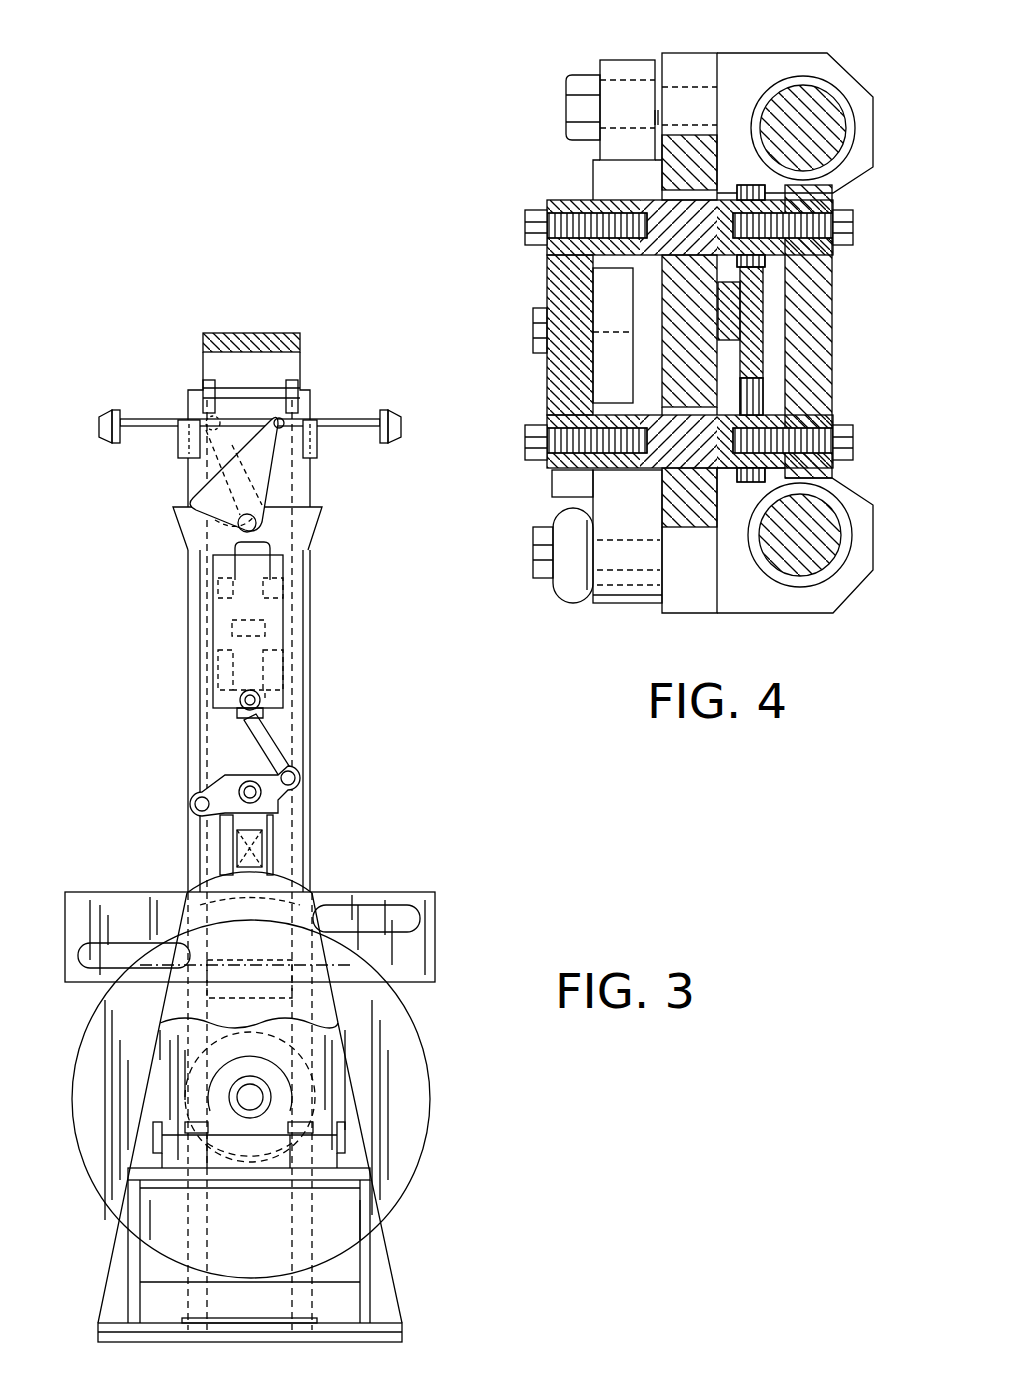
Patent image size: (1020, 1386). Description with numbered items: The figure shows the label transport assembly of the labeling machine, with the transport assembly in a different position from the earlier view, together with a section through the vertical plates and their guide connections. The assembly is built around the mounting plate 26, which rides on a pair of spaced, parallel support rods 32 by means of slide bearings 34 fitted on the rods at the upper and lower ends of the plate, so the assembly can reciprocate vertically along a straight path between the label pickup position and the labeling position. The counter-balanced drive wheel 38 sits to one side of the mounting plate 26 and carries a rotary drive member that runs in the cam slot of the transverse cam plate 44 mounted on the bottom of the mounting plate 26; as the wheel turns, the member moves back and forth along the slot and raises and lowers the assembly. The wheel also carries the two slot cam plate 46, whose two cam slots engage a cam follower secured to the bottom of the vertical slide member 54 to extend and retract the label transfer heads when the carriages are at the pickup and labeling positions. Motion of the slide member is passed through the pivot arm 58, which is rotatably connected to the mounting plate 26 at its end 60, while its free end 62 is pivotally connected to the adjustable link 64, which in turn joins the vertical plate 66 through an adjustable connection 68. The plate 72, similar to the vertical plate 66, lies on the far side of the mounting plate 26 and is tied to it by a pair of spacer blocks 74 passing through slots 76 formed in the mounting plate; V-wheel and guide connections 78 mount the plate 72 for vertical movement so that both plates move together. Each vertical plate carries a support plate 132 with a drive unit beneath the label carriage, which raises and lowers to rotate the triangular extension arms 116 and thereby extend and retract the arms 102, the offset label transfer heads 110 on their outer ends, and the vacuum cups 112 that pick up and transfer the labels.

In FIG. 4, the mounting plate 26 is at (690, 53).
In FIG. 4, the support rods 32 is at (831, 146).
In FIG. 4, the slide bearings 34 is at (837, 90).
In FIG. 3, the drive wheel 38 is at (416, 1052).
In FIG. 3, the transverse cam plate 44 is at (436, 944).
In FIG. 3, the two slot cam plate 46 is at (302, 885).
In FIG. 3, the vertical slide member 54 is at (240, 775).
In FIG. 4, the pivot arm 58 is at (598, 181).
In FIG. 4, the end 60 is at (612, 103).
In FIG. 3, the end 60 is at (195, 803).
In FIG. 4, the free end 62 is at (605, 604).
In FIG. 3, the free end 62 is at (296, 778).
In FIG. 4, the adjustable link 64 is at (552, 486).
In FIG. 3, the adjustable link 64 is at (273, 740).
In FIG. 4, the vertical plate 66 is at (550, 256).
In FIG. 3, the vertical plate 66 is at (222, 622).
In FIG. 4, the adjustable connection 68 is at (608, 299).
In FIG. 4, the plate 72 is at (836, 300).
In FIG. 4, the spacer blocks 74 is at (628, 252).
In FIG. 4, the slots 76 is at (675, 212).
In FIG. 4, the V-wheel and guide connections 78 is at (765, 309).
In FIG. 3, the arms 102 is at (148, 418).
In FIG. 3, the label transfer heads 110 is at (112, 410).
In FIG. 3, the vacuum cups 112 is at (100, 432).
In FIG. 3, the extension arms 116 is at (282, 482).
In FIG. 3, the support plate 132 is at (222, 570).